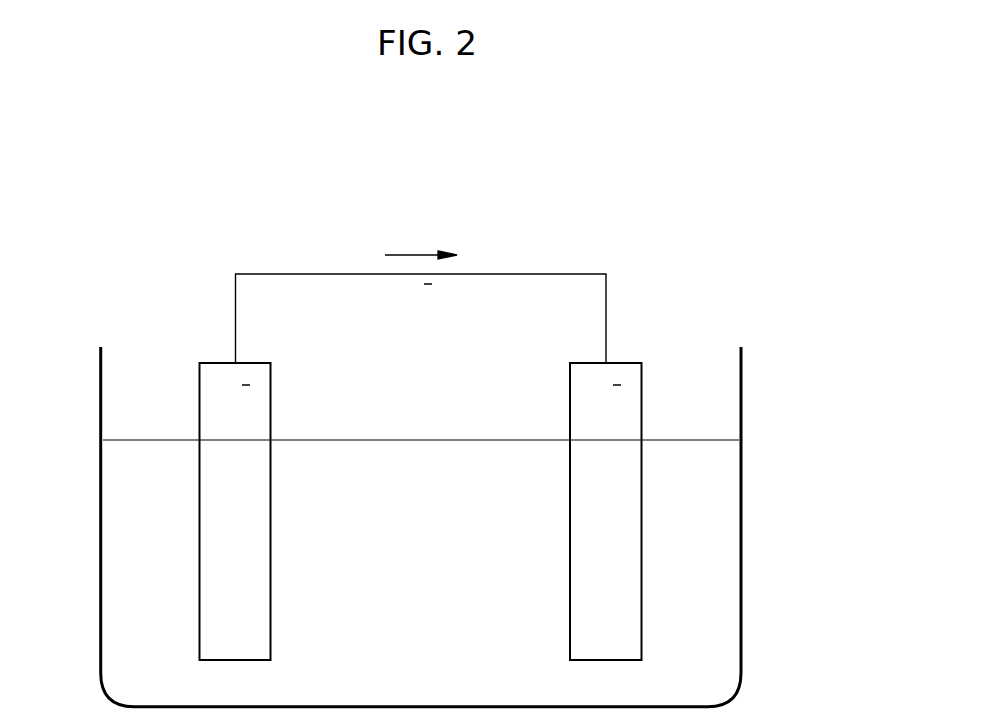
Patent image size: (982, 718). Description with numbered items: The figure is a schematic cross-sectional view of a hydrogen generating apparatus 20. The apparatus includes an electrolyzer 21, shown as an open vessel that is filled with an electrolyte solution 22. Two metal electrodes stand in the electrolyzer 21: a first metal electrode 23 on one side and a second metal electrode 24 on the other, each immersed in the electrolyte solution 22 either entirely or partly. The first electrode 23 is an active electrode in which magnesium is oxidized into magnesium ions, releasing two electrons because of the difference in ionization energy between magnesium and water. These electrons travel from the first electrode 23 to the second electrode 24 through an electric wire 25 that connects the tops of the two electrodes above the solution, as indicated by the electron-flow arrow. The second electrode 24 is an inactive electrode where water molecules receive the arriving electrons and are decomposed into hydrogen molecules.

The hydrogen generating apparatus 20 is at (584, 198).
The electrolyzer 21 is at (742, 612).
The electrolyte solution 22 is at (713, 657).
The first metal electrode 23 is at (215, 620).
The second metal electrode 24 is at (627, 565).
The electric wire 25 is at (235, 276).